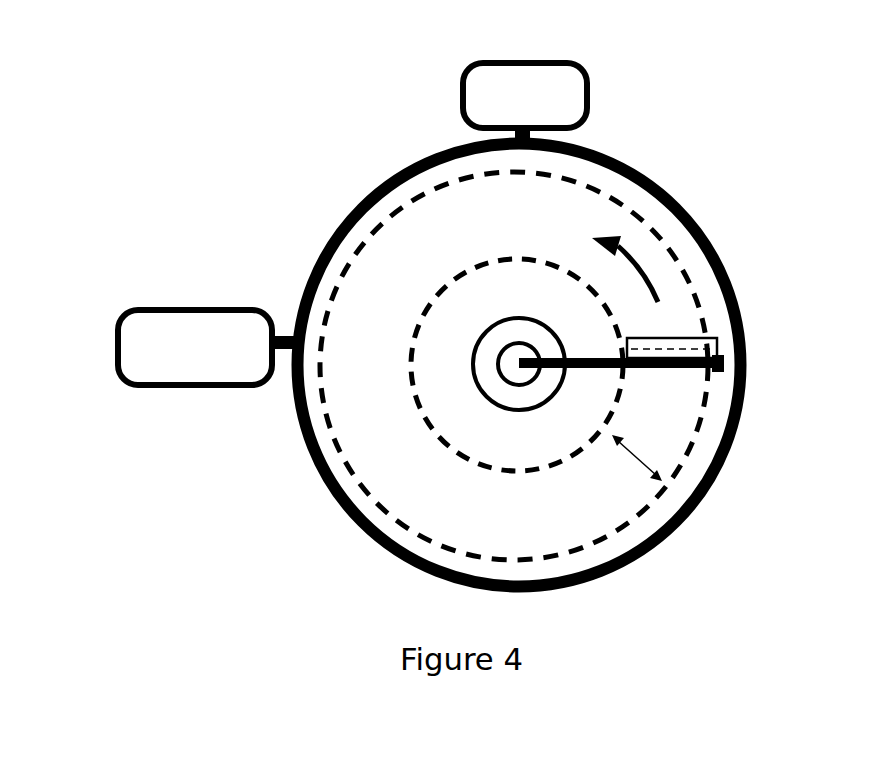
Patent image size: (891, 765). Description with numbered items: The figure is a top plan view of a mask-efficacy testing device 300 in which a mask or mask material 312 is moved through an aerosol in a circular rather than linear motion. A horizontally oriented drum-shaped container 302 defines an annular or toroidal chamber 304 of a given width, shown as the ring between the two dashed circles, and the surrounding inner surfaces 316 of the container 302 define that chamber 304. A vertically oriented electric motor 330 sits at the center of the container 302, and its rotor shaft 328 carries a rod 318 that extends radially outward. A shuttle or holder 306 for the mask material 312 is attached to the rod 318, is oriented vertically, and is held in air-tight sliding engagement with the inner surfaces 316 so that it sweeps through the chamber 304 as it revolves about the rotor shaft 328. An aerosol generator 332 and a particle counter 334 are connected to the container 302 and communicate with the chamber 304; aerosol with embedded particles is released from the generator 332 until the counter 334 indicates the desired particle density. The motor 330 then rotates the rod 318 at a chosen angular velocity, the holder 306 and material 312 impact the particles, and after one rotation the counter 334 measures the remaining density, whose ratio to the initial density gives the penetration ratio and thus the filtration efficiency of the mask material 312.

The mask-efficacy testing device 300 is at (802, 150).
The drum-shaped container 302 is at (741, 436).
The chamber 304 is at (486, 511).
The shuttle or holder 306 is at (721, 352).
The mask or mask material 312 is at (697, 338).
The inner surfaces 316 is at (593, 536).
The rod 318 is at (723, 368).
The rotor shaft 328 is at (500, 374).
The electric motor 330 is at (473, 378).
The aerosol generator 332 is at (186, 308).
The particle counter 334 is at (588, 87).